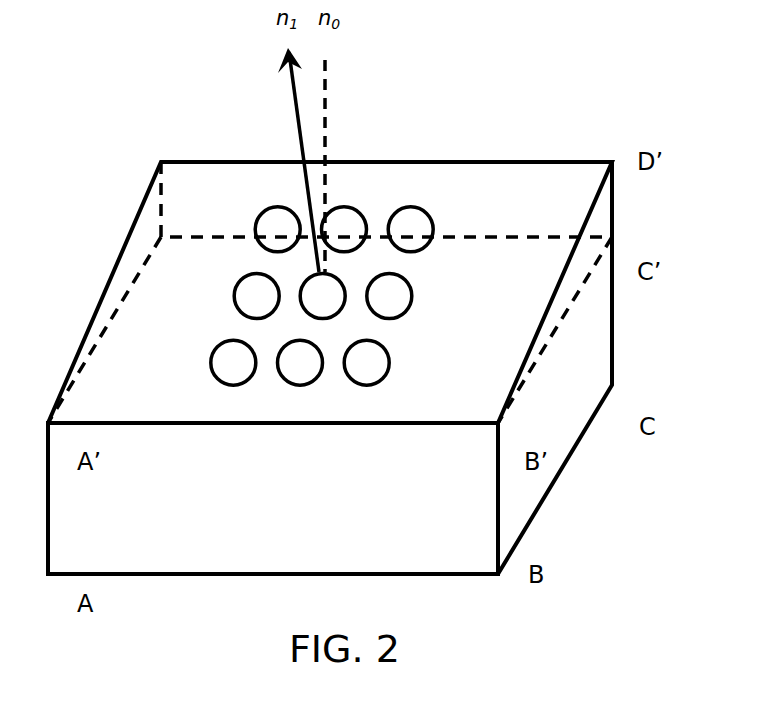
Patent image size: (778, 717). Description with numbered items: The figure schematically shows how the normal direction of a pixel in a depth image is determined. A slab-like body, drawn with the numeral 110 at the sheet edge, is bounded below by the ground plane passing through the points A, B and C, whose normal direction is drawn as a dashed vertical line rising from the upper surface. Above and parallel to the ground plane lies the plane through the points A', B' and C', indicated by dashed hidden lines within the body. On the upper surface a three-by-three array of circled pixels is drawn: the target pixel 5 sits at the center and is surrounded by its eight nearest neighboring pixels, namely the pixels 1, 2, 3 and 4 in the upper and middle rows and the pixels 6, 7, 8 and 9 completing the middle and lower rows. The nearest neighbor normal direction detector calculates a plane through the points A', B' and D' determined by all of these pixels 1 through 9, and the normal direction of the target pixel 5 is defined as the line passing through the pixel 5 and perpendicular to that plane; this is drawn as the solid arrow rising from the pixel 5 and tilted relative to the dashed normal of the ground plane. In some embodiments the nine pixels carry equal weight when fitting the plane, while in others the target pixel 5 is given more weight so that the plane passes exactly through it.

The substrate slab 110 is at (379, 439).
The neighboring pixel 1 is at (277, 229).
The neighboring pixel 2 is at (344, 229).
The neighboring pixel 3 is at (410, 229).
The neighboring pixel 4 is at (256, 296).
The target pixel 5 is at (322, 296).
The neighboring pixel 6 is at (389, 296).
The neighboring pixel 7 is at (233, 362).
The neighboring pixel 8 is at (300, 362).
The neighboring pixel 9 is at (366, 362).